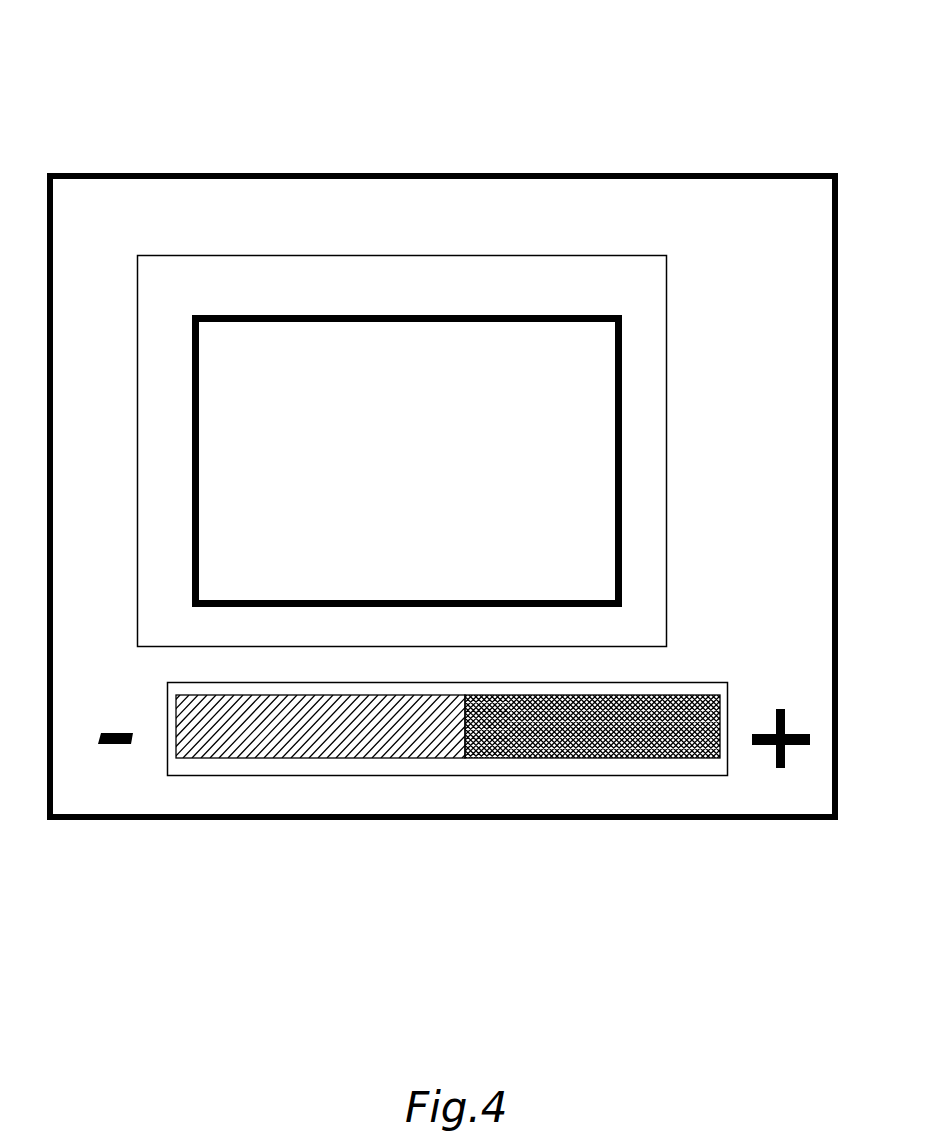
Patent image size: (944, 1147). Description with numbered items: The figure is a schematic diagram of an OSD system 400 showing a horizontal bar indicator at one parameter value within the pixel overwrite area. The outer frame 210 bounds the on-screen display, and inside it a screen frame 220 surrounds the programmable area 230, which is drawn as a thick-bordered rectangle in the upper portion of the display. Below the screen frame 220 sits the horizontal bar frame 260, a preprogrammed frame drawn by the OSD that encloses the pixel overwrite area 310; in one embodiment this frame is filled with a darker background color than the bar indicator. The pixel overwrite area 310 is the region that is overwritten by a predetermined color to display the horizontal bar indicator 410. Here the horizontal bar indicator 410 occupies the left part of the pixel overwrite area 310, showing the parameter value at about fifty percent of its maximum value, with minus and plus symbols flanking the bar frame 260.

The OSD system 400 is at (633, 78).
The frame 210 is at (120, 168).
The screen frame 220 is at (178, 253).
The programmable area 230 is at (300, 316).
The horizontal bar frame 260 is at (454, 700).
The horizontal bar indicator 410 is at (340, 683).
The pixel overwrite area 310 is at (540, 683).